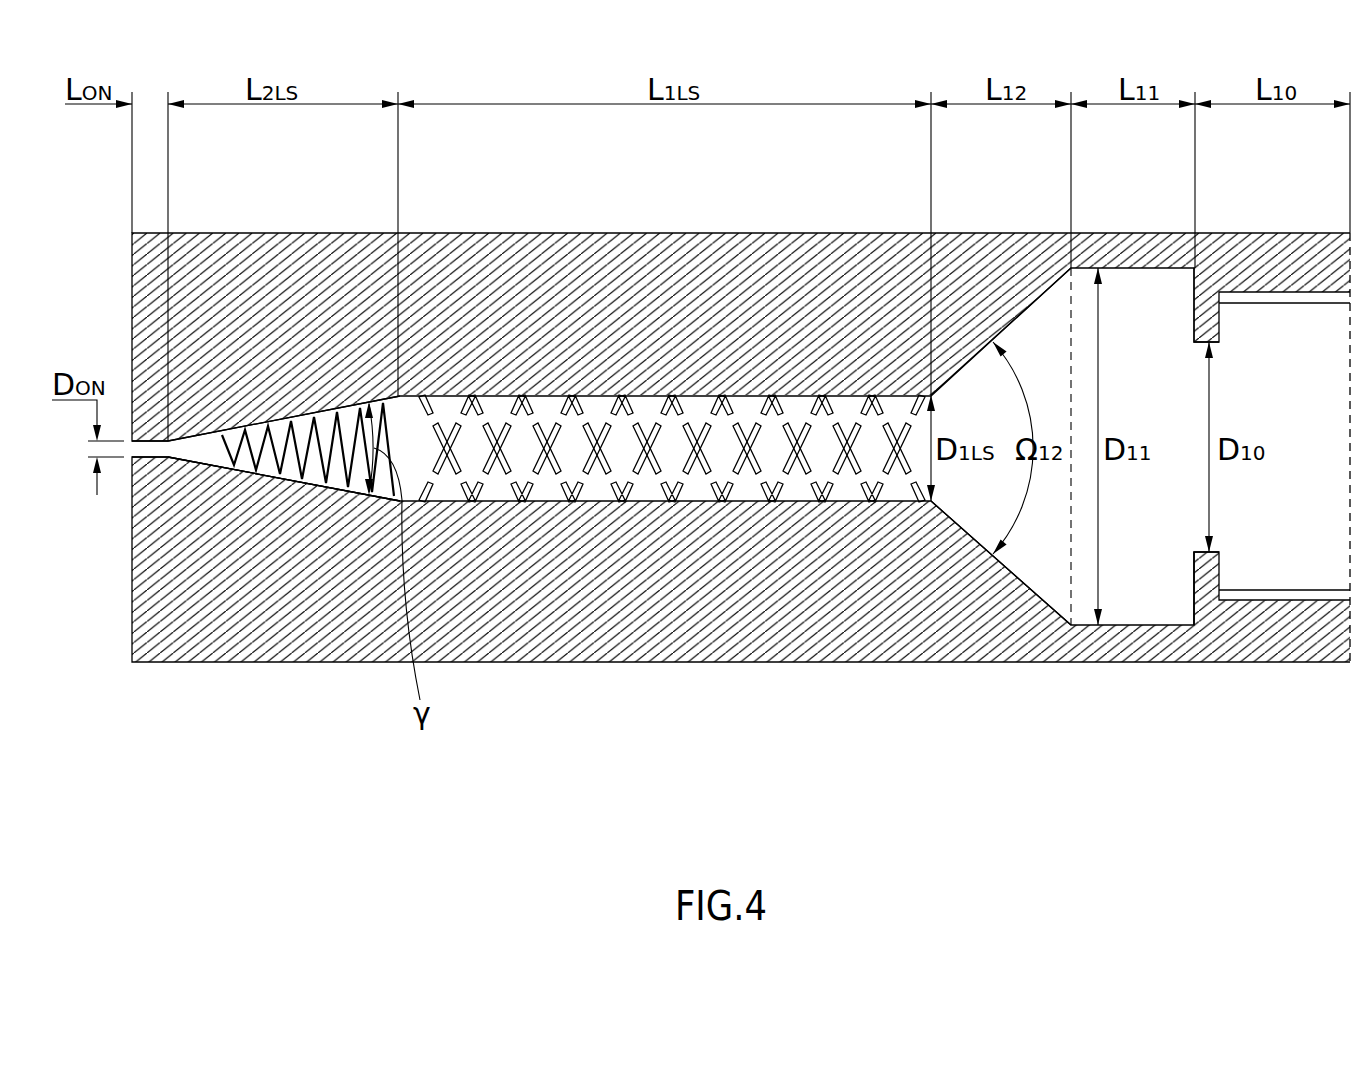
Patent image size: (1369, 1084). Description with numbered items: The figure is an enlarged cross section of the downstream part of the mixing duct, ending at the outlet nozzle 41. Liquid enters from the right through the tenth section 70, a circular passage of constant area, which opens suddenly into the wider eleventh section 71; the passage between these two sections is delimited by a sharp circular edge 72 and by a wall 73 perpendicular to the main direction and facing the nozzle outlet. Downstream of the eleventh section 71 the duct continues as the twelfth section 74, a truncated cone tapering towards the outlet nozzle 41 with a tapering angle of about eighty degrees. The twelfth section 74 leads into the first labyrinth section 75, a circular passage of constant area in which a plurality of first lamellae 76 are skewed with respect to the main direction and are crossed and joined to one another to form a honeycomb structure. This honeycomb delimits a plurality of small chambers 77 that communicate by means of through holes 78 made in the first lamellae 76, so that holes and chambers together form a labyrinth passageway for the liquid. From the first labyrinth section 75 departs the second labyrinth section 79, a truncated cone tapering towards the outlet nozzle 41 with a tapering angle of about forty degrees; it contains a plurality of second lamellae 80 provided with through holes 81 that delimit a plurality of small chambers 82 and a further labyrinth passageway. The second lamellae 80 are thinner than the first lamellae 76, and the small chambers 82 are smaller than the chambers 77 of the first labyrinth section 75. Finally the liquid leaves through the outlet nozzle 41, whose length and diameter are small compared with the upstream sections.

The outlet nozzle 41 is at (135, 508).
The tenth section 70 is at (1312, 463).
The eleventh section 71 is at (1164, 409).
The sharp circular edge 72 is at (1194, 341).
The wall 73 is at (1193, 585).
The twelfth section 74 is at (1040, 348).
The first labyrinth section 75 is at (692, 492).
The first lamellae 76 is at (594, 450).
The small chambers 77 is at (855, 410).
The through holes 78 is at (640, 410).
The second labyrinth section 79 is at (280, 484).
The second lamellae 80 is at (345, 478).
The through holes 81 is at (254, 430).
The small chambers 82 is at (268, 462).